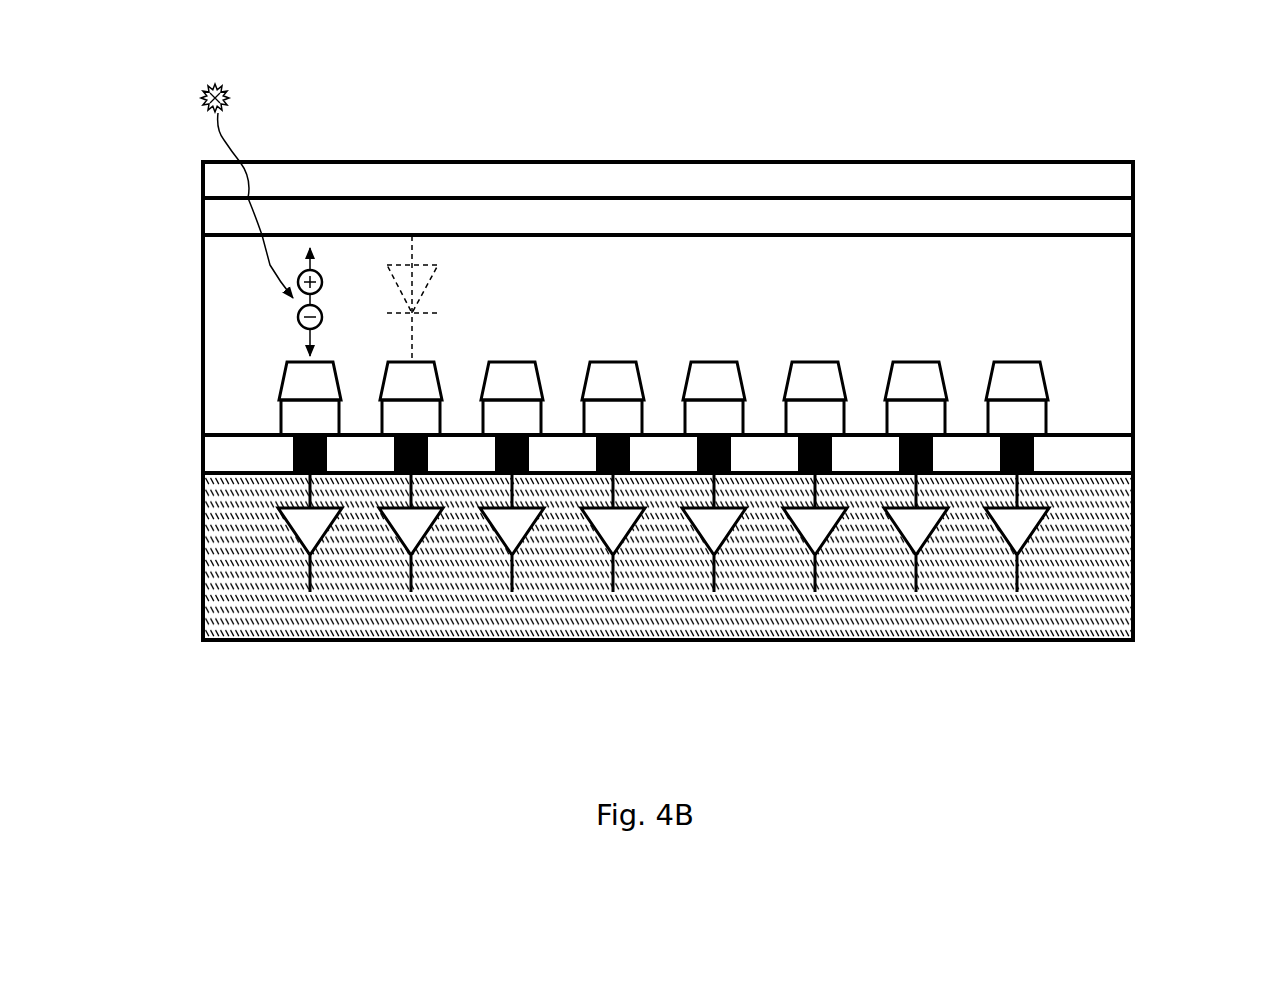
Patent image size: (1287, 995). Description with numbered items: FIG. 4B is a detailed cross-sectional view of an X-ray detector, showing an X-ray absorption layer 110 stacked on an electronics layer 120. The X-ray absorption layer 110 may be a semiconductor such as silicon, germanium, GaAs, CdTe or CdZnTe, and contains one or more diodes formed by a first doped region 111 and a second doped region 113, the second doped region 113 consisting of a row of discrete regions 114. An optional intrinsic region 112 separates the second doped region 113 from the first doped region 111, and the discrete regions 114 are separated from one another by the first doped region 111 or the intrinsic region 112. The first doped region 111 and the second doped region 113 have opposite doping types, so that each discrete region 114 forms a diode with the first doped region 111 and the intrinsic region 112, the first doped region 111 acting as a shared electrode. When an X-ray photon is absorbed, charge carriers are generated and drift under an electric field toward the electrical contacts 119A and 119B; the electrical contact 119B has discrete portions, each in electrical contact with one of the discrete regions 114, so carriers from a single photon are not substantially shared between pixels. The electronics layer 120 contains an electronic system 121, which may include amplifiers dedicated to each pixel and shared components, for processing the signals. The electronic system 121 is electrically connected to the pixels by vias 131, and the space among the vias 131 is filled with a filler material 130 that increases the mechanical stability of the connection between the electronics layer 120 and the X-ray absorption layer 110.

The X-ray absorption layer 110 is at (193, 198).
The first doped region 111 is at (1137, 217).
The intrinsic region 112 is at (1137, 292).
The second doped region 113 is at (1143, 360).
The discrete regions 114 is at (663, 381).
The electrical contact 119A is at (1058, 186).
The electrical contact 119B is at (663, 417).
The electronics layer 120 is at (193, 473).
The electronic system 121 is at (1045, 535).
The filler material 130 is at (1137, 470).
The vias 131 is at (292, 453).